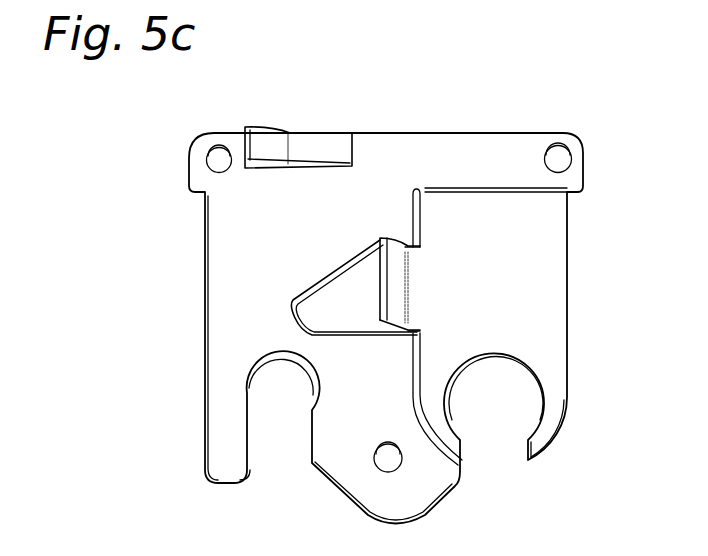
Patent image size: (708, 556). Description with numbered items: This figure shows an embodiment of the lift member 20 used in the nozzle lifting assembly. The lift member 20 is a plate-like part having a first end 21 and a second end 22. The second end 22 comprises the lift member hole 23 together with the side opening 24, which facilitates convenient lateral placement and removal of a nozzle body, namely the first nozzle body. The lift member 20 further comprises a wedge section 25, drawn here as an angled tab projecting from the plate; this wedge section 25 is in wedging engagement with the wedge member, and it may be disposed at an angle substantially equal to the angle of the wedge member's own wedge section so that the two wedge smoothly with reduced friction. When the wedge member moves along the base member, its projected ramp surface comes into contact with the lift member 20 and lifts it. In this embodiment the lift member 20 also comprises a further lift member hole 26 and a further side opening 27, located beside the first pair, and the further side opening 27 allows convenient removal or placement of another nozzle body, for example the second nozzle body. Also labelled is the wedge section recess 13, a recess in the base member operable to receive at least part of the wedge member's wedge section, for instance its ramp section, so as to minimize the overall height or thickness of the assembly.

The wedge section recess 13 is at (324, 146).
The lift member 20 is at (567, 327).
The first end 21 is at (492, 218).
The second end 22 is at (555, 441).
The lift member hole 23 is at (517, 363).
The side opening 24 is at (523, 453).
The wedge section 25 is at (393, 290).
The further lift member hole 26 is at (282, 352).
The further side opening 27 is at (308, 445).